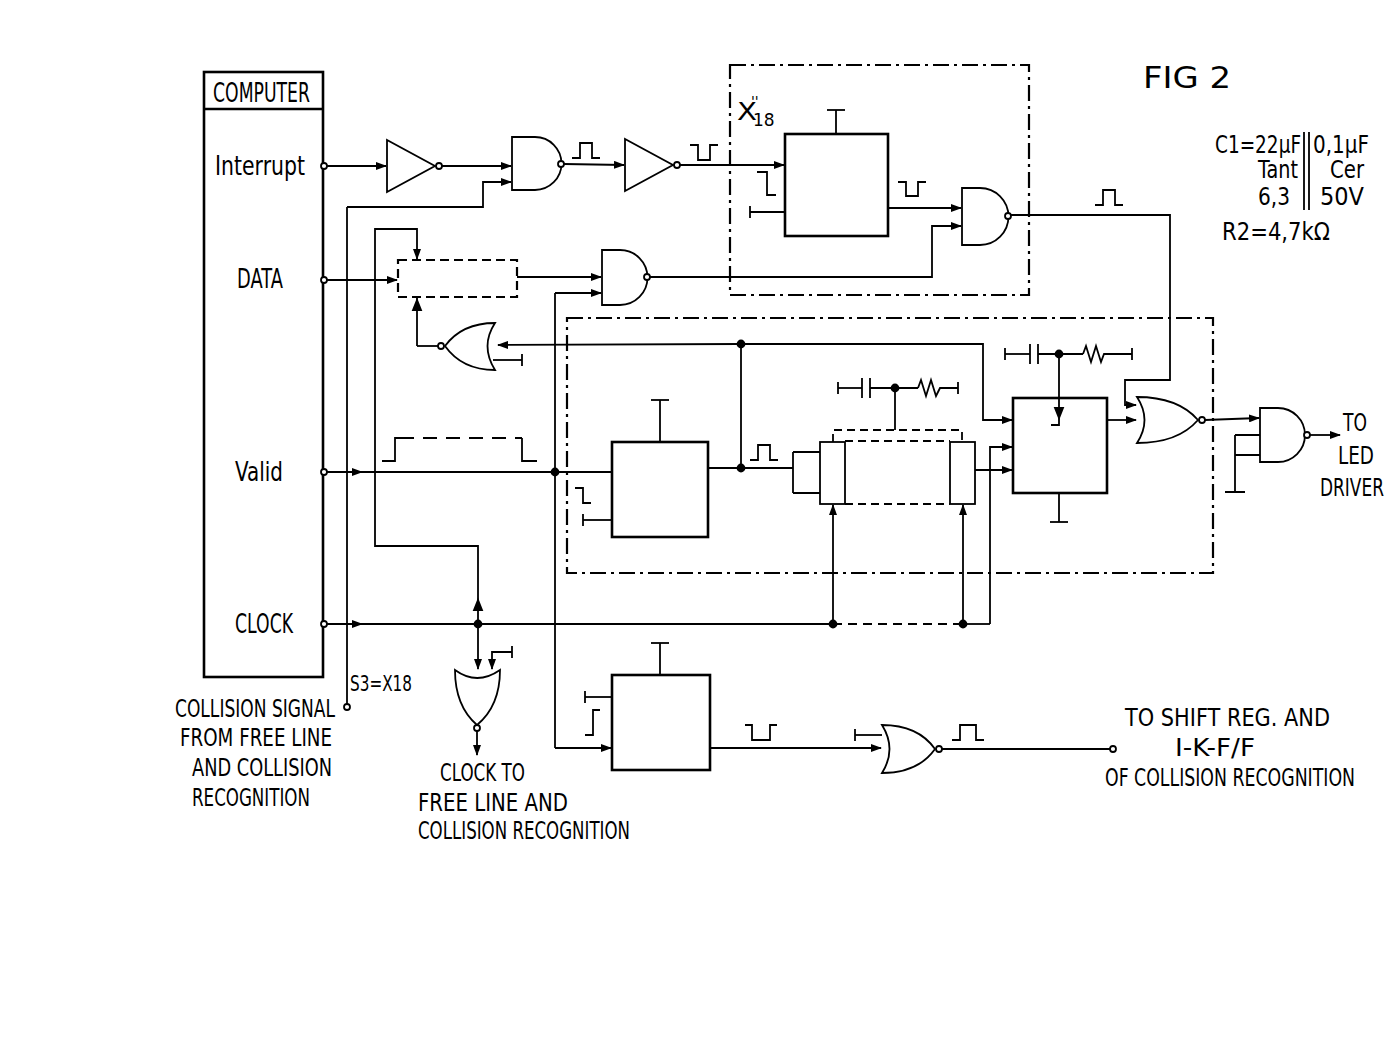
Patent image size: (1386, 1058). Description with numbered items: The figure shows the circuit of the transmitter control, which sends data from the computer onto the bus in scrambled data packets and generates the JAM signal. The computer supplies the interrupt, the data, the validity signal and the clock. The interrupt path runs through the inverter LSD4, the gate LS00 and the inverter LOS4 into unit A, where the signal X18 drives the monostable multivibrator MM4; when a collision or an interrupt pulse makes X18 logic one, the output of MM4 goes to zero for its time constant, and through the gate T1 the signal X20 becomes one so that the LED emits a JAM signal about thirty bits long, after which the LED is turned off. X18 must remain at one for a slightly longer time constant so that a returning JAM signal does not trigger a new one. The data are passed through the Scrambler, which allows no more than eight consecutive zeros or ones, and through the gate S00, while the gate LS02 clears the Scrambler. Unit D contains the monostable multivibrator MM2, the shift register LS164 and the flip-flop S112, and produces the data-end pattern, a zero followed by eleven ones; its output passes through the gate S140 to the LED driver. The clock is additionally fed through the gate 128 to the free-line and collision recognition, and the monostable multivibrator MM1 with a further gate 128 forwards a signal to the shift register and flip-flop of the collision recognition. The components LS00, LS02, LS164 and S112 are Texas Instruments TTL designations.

The LS 04 component LSD4 is at (384, 146).
The signal x18 X18 is at (427, 422).
The LS 00 component LS00 is at (532, 145).
The LS 04 component LOS4 is at (646, 146).
The unit A is at (1032, 110).
The monostable multivibrator M.M. 4 MM4 is at (843, 160).
The NAND gate T1 is at (830, 218).
The signal x20 X20 is at (1093, 294).
The scrambler Scrambler is at (422, 426).
The NAND gate S00 is at (626, 277).
The LS 02 component LS02 is at (811, 402).
The unit D is at (1122, 576).
The monoflop 2 bit MM2 is at (696, 467).
The LS 164 component LS164 is at (850, 497).
The S 112 component S112 is at (1072, 438).
The NAND gate to LED driver S140 is at (1281, 450).
The NOR gate 128 is at (785, 698).
The monoflop 1 bit MM1 is at (718, 702).